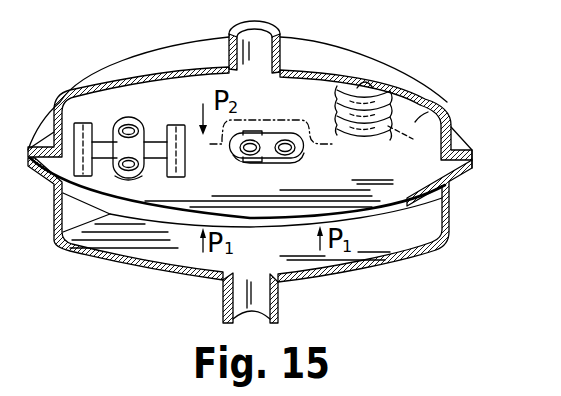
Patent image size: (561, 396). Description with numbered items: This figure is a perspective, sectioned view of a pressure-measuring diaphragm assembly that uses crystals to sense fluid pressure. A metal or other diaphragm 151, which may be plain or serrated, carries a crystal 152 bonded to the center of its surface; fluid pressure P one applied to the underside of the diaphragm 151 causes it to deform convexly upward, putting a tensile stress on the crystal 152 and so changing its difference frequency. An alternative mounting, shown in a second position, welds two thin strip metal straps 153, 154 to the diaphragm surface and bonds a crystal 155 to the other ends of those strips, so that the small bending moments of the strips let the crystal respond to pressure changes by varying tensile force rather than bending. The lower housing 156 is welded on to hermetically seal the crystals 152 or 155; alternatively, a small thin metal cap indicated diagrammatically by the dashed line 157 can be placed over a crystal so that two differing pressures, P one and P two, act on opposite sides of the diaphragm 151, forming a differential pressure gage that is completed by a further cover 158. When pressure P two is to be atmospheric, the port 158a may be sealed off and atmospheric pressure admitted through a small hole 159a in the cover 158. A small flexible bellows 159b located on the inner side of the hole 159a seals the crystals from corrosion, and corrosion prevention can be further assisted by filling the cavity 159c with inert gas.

The diaphragm 151 is at (366, 206).
The crystal 152 is at (301, 159).
The thin strip metal strap 153 is at (98, 143).
The thin strip metal strap 154 is at (157, 140).
The crystal 155 is at (143, 174).
The housing 156 is at (440, 247).
The dashed line (small thin metal cap) 157 is at (252, 116).
The cover 158 is at (420, 68).
The port 158a is at (279, 37).
The small hole 159a is at (367, 78).
The flexible bellows 159b is at (381, 124).
The cavity 159c is at (417, 121).